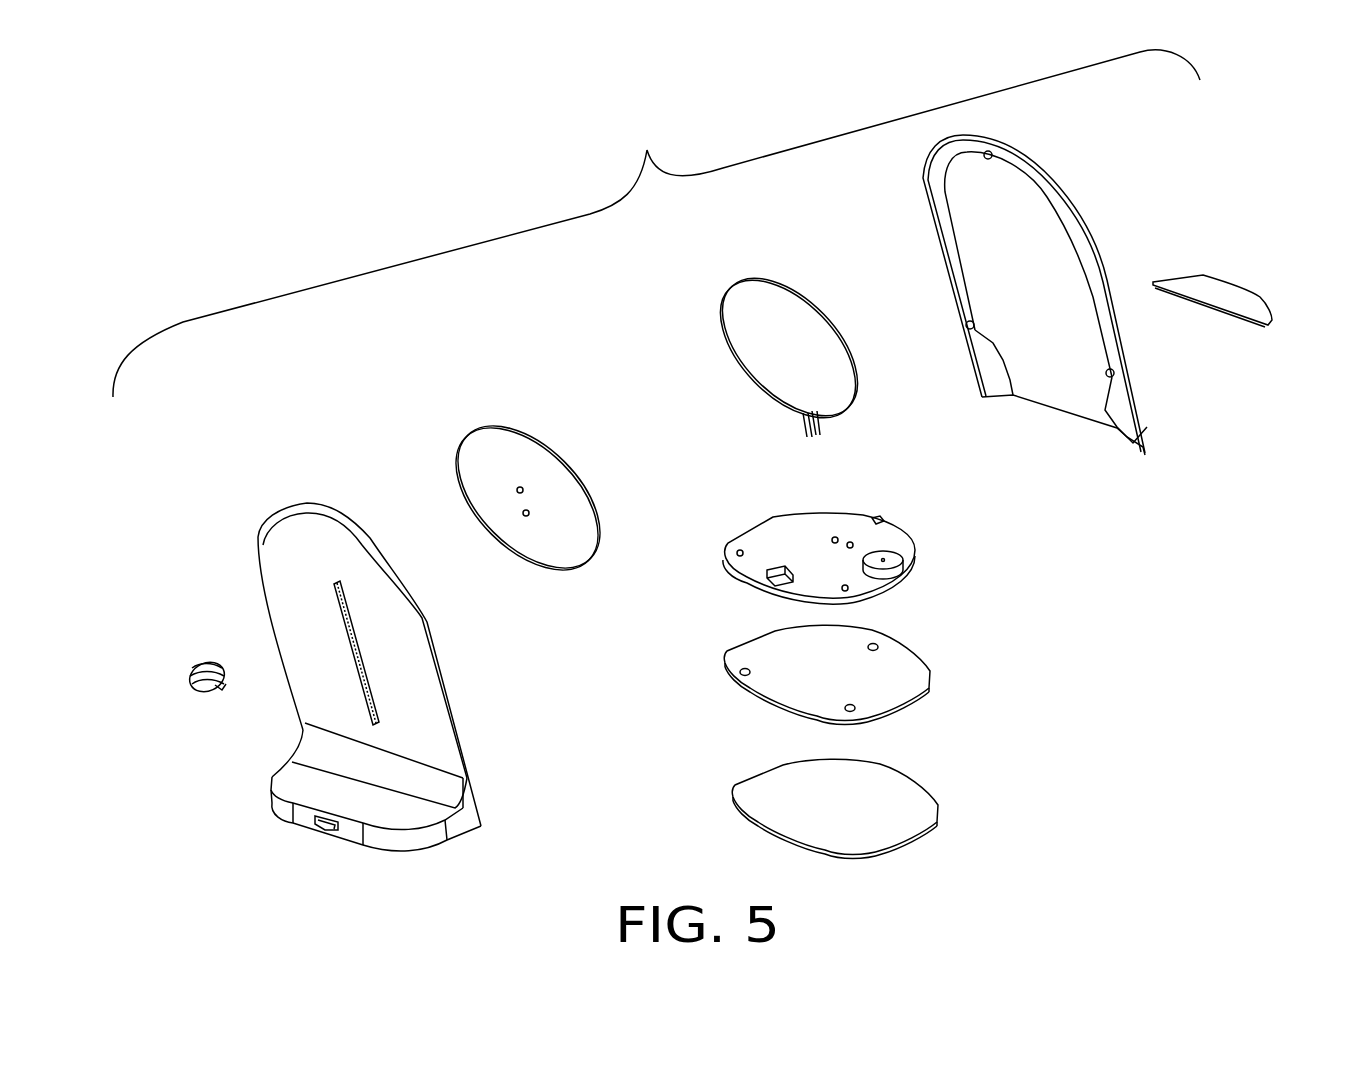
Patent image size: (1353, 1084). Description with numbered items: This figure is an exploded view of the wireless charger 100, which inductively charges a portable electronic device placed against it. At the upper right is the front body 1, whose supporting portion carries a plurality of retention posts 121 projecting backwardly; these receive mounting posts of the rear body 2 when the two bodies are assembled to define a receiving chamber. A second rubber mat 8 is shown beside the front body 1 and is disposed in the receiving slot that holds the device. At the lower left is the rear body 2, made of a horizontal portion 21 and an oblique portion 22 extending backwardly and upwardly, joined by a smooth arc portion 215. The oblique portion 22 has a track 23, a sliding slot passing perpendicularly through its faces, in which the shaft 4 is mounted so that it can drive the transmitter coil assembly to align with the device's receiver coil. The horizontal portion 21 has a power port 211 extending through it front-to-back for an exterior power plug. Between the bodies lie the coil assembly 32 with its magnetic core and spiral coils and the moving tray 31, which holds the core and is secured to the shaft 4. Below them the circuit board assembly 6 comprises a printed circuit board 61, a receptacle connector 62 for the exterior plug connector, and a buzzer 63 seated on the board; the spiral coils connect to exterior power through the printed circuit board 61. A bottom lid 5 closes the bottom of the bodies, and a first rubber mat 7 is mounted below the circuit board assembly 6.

The wireless charger 100 is at (656, 223).
The front body 1 is at (1041, 295).
The retention posts 121 is at (1118, 376).
The second rubber mat 8 is at (1224, 270).
The coil assembly 32 is at (708, 276).
The moving tray 31 is at (448, 421).
The circuit board assembly 6 is at (830, 525).
The printed circuit board 61 is at (805, 533).
The receptacle connector 62 is at (765, 578).
The buzzer 63 is at (905, 556).
The bottom lid 5 is at (735, 630).
The first rubber mat 7 is at (737, 762).
The shaft 4 is at (182, 656).
The rear body 2 is at (339, 702).
The oblique portion 22 is at (282, 578).
The track 23 is at (350, 620).
The smooth arc portion 215 is at (320, 755).
The horizontal portion 21 is at (407, 843).
The power port 211 is at (313, 833).